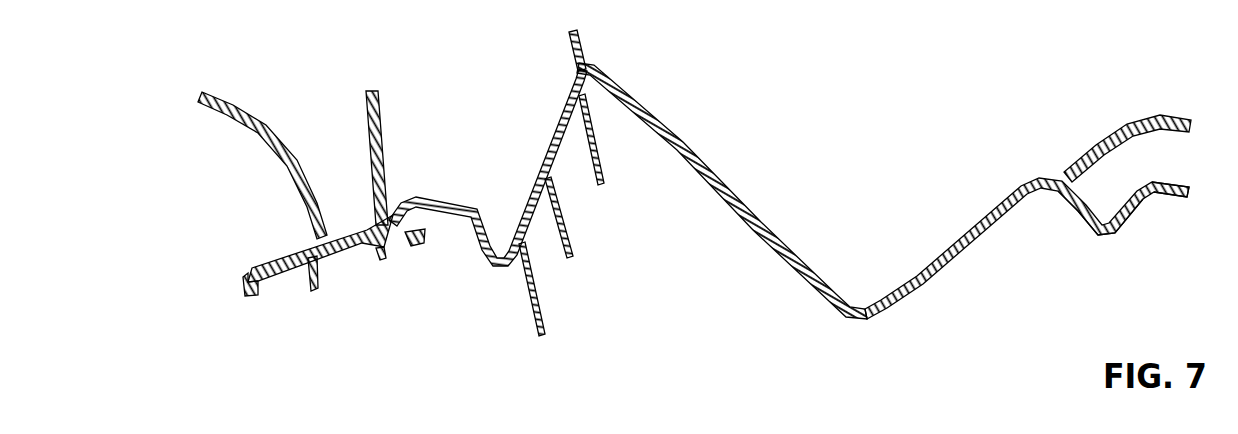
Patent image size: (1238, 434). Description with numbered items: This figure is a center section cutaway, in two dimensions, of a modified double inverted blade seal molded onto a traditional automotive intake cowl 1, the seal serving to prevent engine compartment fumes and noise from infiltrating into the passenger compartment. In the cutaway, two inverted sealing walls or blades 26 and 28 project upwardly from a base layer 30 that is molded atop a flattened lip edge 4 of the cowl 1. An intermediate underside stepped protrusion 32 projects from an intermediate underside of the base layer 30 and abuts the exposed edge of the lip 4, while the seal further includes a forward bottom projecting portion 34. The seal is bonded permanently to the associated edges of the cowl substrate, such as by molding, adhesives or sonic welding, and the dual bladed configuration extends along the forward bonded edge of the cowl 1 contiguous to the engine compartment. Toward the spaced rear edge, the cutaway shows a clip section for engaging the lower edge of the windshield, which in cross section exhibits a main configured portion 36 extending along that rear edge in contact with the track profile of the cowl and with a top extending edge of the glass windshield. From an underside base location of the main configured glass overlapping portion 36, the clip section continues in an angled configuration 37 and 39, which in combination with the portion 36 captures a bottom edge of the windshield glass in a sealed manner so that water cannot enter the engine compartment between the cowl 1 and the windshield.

The automotive intake cowl 1 is at (757, 232).
The flattened lip edge 4 is at (373, 257).
The inverted sealing wall or blade 26 is at (387, 128).
The inverted sealing wall or blade 28 is at (263, 125).
The base layer 30 is at (343, 262).
The intermediate underside stepped protrusion 32 is at (313, 293).
The forward bottom projecting portion 34 is at (243, 297).
The main configured portion 36 is at (1113, 132).
The angled configuration 37 is at (1107, 208).
The angled configuration 39 is at (1172, 178).